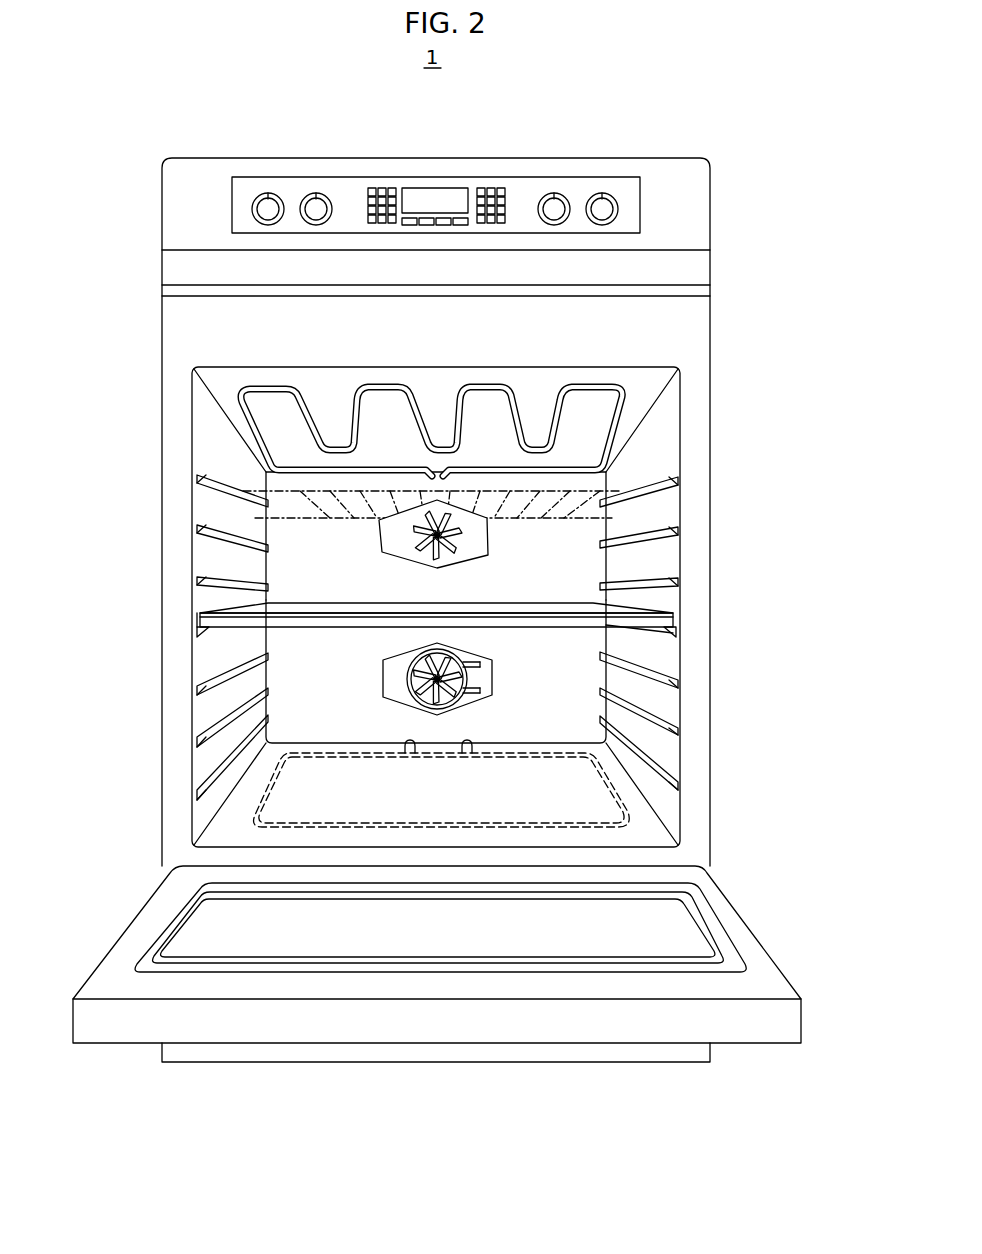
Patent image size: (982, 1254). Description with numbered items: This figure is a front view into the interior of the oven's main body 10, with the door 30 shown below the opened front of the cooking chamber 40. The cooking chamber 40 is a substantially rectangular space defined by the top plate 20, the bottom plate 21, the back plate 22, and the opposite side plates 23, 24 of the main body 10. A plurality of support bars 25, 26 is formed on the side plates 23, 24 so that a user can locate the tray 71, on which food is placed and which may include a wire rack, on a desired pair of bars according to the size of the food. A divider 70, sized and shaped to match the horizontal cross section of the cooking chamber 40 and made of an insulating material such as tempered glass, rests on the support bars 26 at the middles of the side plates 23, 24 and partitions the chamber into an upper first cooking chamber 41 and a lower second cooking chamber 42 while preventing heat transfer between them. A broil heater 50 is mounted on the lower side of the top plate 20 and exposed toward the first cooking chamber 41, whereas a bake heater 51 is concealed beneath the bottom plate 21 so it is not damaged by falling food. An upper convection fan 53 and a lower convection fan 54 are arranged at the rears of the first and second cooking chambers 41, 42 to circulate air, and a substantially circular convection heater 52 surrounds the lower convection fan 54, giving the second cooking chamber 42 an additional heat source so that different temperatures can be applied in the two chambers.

The main body 10 is at (150, 333).
The top plate 20 is at (642, 367).
The bottom plate 21 is at (637, 840).
The back plate 22 is at (562, 693).
The side plate 23 is at (213, 450).
The side plate 24 is at (664, 452).
The support bars 25 is at (196, 485).
The support bars 26 is at (204, 637).
The door 30 is at (755, 966).
The cooking chamber 40 is at (783, 524).
The first cooking chamber 41 is at (564, 576).
The second cooking chamber 42 is at (561, 653).
The broil heater 50 is at (244, 413).
The bake heater 51 is at (242, 812).
The convection heater 52 is at (390, 706).
The upper convection fan 53 is at (412, 540).
The lower convection fan 54 is at (385, 656).
The divider 70 is at (200, 617).
The tray 71 is at (297, 511).